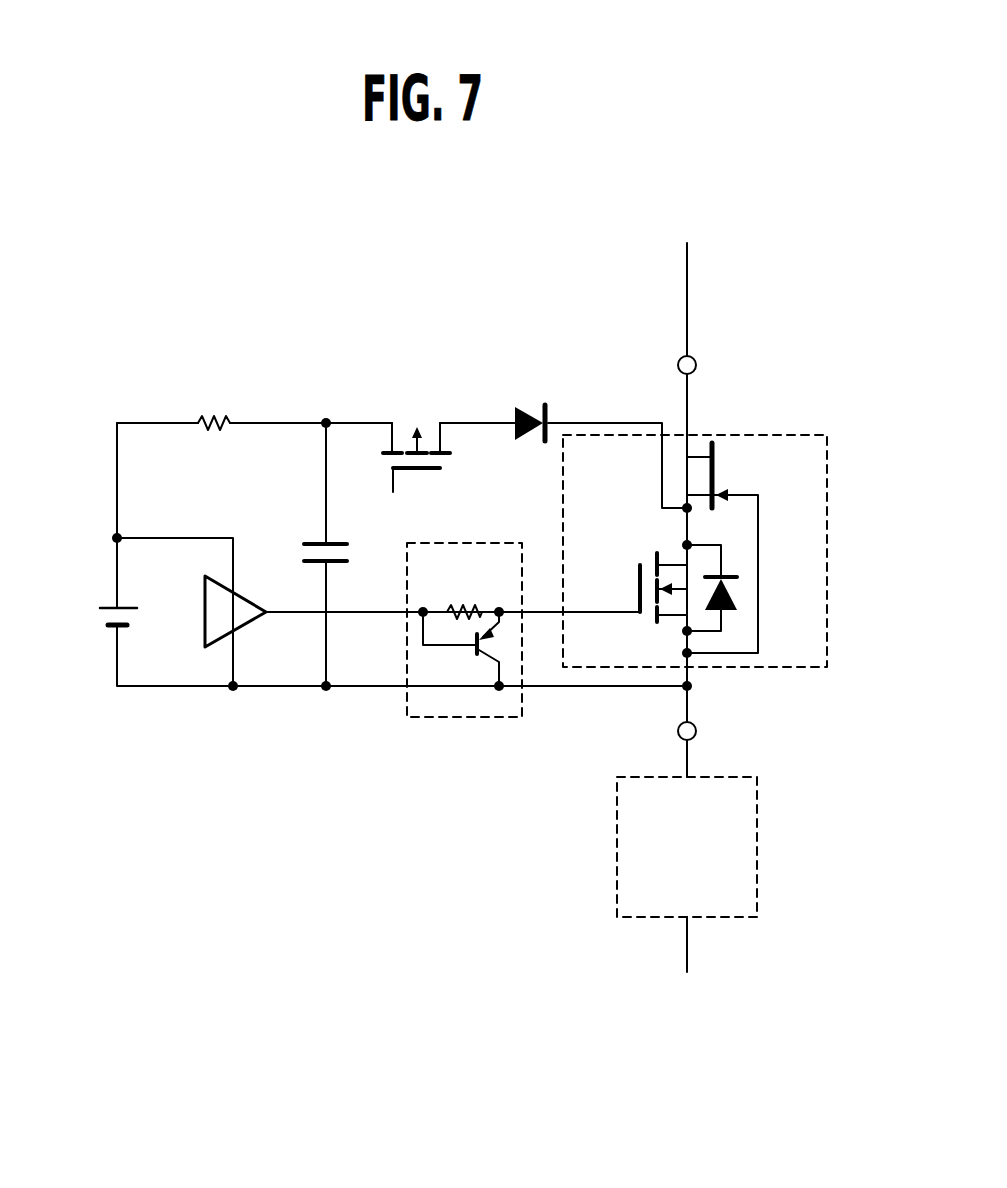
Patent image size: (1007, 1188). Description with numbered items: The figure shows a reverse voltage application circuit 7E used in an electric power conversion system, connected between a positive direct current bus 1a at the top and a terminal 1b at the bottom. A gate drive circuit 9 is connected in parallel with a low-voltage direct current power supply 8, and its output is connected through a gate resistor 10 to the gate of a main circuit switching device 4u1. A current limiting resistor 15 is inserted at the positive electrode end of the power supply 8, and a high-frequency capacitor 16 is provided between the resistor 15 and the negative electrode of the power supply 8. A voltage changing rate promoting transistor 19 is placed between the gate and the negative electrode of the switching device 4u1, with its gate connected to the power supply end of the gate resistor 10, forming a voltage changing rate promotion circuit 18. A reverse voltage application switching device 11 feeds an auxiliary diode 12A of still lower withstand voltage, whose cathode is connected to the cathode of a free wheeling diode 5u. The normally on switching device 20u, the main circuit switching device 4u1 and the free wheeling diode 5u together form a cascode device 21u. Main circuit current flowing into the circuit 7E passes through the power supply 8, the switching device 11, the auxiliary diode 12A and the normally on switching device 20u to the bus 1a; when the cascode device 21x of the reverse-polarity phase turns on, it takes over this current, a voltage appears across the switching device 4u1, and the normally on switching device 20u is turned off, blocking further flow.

The positive direct current bus 1a is at (688, 217).
The second terminal 1b is at (690, 997).
The reverse voltage application circuit 7E is at (802, 277).
The low-voltage direct current power supply 8 is at (100, 608).
The gate drive circuit 9 is at (210, 648).
The gate resistor 10 is at (464, 606).
The reverse voltage application switching device 11 is at (412, 415).
The auxiliary diode 12A is at (533, 418).
The current limiting resistor 15 is at (216, 417).
The high-frequency capacitor 16 is at (314, 543).
The voltage changing rate promotion circuit 18 is at (465, 722).
The voltage changing rate promoting transistor 19 is at (500, 647).
The normally on switching device 20u is at (715, 467).
The cascode device 21u is at (747, 433).
The cascode device 21x is at (723, 775).
The main circuit switching device 4u1 is at (648, 556).
The free wheeling diode 5u is at (717, 577).